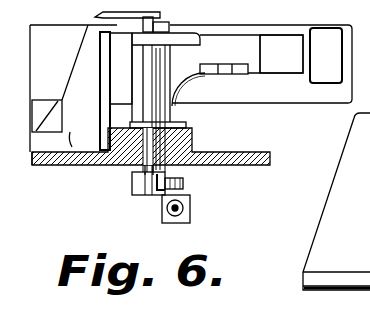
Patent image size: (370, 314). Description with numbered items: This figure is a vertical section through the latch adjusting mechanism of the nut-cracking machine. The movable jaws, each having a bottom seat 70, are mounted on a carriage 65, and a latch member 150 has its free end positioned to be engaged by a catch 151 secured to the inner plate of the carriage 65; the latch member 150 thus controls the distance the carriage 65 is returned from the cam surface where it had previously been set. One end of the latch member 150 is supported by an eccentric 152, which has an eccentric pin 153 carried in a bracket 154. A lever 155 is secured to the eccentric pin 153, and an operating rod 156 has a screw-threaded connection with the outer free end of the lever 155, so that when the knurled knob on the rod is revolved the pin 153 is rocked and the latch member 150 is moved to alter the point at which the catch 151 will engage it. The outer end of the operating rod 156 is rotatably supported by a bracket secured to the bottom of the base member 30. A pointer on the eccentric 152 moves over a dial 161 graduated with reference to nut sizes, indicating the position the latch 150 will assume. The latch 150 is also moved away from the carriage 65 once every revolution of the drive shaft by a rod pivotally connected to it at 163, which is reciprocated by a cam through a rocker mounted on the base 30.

The base member 30 is at (268, 166).
The carriage 65 is at (250, 20).
The bottom seat 70 is at (369, 200).
The latch member 150 is at (282, 43).
The catch 151 is at (328, 37).
The eccentric 152 is at (160, 66).
The eccentric pin 153 is at (132, 166).
The bracket 154 is at (48, 165).
The lever 155 is at (155, 198).
The operating rod 156 is at (191, 208).
The dial 161 is at (88, 25).
The pivot connection 163 is at (243, 76).